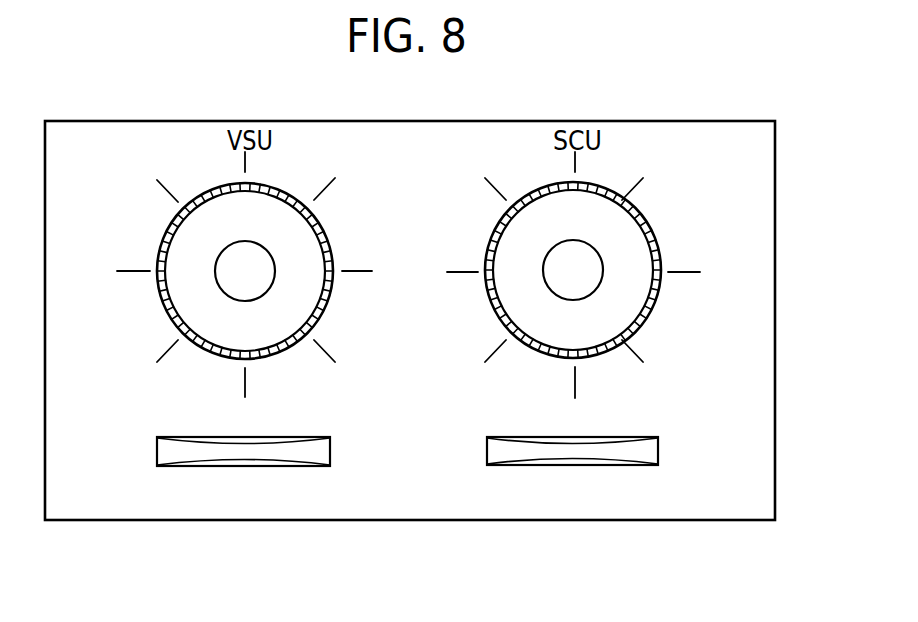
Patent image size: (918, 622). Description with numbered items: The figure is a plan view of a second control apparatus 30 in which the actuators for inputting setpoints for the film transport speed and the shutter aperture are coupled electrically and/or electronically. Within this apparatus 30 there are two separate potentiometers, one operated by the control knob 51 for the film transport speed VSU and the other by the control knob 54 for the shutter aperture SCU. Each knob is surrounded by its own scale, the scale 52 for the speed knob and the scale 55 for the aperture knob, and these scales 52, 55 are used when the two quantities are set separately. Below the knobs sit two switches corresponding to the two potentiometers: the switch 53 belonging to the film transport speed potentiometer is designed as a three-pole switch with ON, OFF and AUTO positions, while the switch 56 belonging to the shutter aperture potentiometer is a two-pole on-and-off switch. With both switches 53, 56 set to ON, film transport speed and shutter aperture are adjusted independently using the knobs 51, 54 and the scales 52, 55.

The control panel 30 is at (715, 99).
The control knob 51 is at (198, 253).
The scale 52 is at (317, 199).
The switch 53 is at (313, 452).
The control knob 54 is at (618, 228).
The scale 55 is at (685, 272).
The switch 56 is at (580, 467).